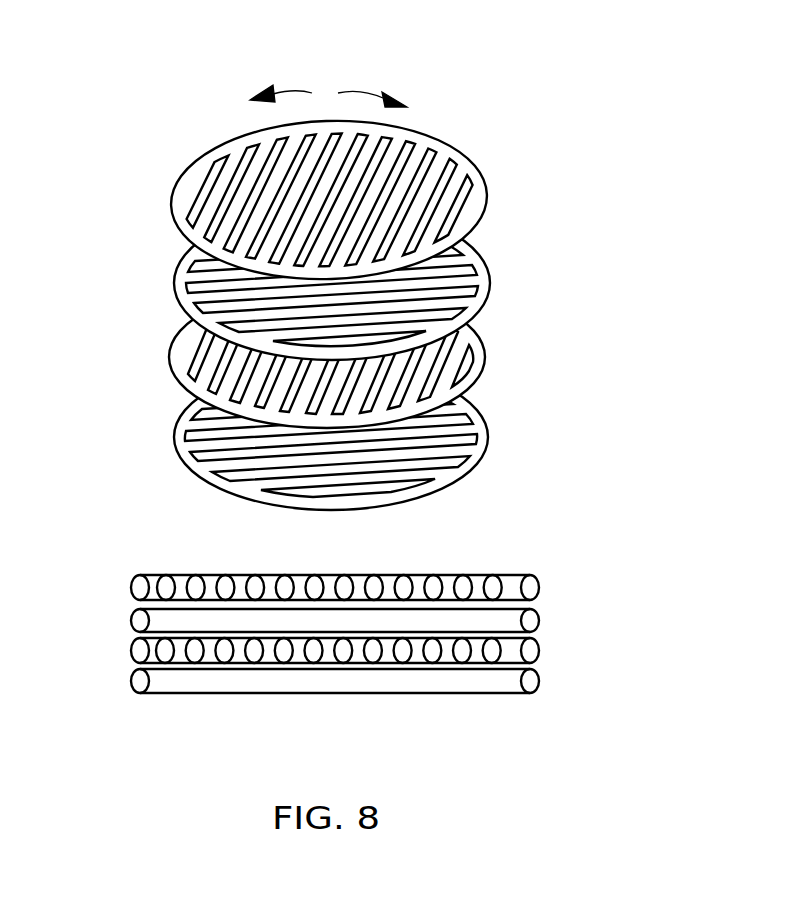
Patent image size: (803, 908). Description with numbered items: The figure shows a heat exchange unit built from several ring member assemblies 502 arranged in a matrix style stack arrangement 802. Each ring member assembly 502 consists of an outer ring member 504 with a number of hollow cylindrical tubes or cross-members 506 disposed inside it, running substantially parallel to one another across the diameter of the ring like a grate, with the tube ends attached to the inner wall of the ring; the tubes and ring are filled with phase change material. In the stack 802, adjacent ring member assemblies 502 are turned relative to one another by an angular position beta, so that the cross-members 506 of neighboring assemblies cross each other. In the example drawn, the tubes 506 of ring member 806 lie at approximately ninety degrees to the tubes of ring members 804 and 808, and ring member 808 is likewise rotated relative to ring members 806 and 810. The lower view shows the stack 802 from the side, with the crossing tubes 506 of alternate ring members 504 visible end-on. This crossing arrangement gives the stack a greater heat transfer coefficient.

The ring member assembly 502 is at (413, 295).
The outer ring member 504 is at (354, 356).
The cylindrical tube 506 is at (195, 195).
The matrix style stack arrangement 802 is at (331, 406).
The ring member 804 is at (450, 136).
The ring member 806 is at (495, 250).
The ring member 808 is at (495, 343).
The ring member 810 is at (498, 418).